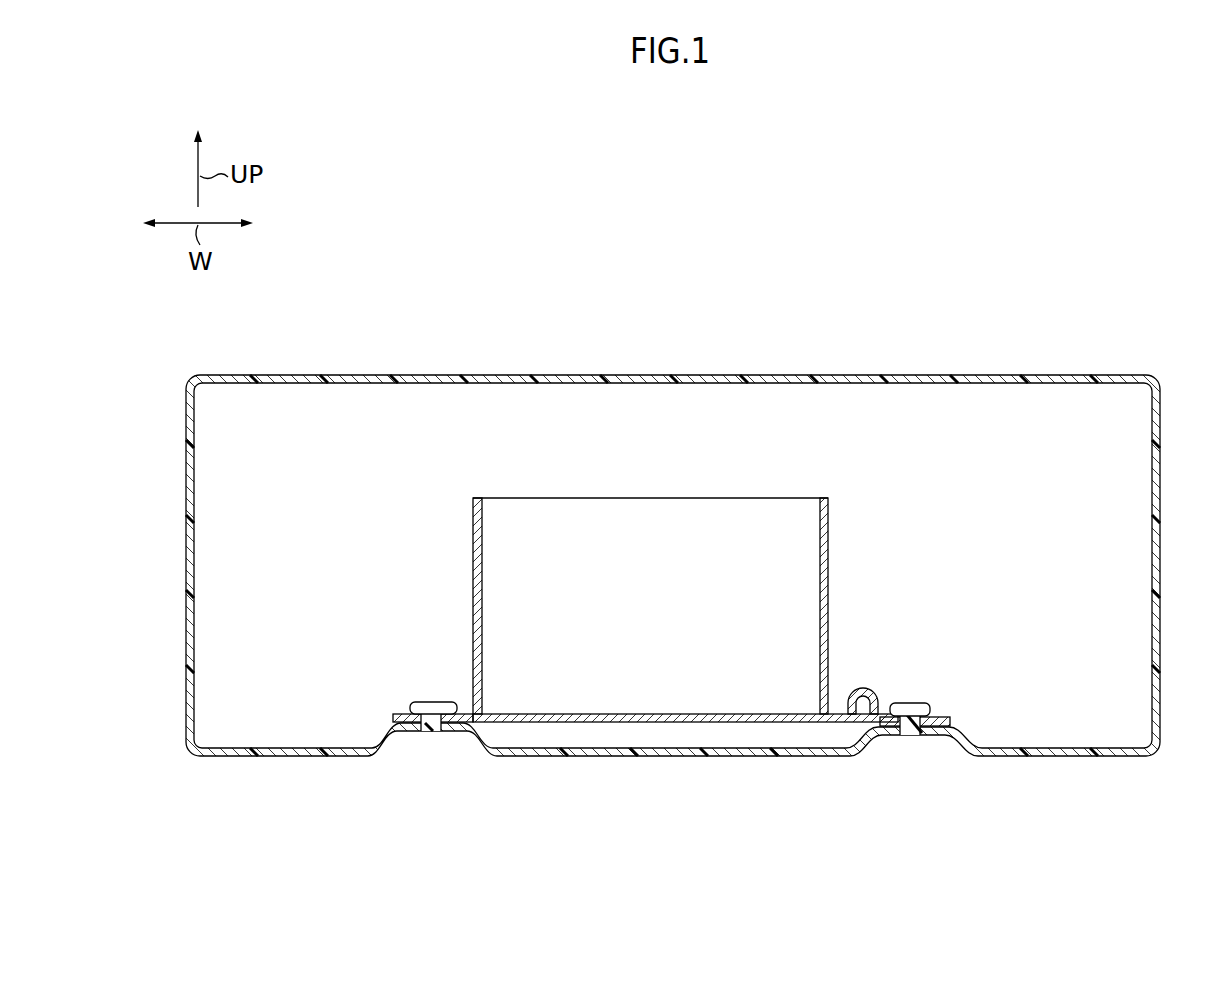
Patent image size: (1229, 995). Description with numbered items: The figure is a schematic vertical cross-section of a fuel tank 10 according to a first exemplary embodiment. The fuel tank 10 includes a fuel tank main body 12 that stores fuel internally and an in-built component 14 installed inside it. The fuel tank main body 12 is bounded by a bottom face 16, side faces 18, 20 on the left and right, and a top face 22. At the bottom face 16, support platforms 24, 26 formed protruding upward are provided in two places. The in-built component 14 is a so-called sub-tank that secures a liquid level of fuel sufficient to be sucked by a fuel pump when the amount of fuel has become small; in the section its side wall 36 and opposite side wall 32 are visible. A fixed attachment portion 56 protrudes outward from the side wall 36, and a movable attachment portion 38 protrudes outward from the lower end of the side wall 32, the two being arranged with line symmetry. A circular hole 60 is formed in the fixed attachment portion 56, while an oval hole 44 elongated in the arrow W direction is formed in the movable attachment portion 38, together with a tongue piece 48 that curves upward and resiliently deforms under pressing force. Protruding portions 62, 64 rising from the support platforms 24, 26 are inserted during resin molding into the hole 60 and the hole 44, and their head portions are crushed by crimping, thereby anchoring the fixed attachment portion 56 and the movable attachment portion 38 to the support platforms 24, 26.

The fuel tank 10 is at (788, 296).
The fuel tank main body 12 is at (368, 370).
The in-built component 14 is at (656, 572).
The bottom face 16 is at (651, 757).
The side face 18 is at (188, 566).
The side face 20 is at (1158, 553).
The top face 22 is at (720, 383).
The support platform 24 is at (413, 733).
The support platform 26 is at (936, 736).
The side wall 32 is at (828, 560).
The side wall 36 is at (473, 558).
The movable attachment portion 38 is at (946, 719).
The hole 44 is at (912, 727).
The tongue piece 48 is at (860, 682).
The fixed attachment portion 56 is at (405, 716).
The hole 60 is at (437, 722).
The protruding portion 62 is at (433, 680).
The protruding portion 64 is at (914, 704).